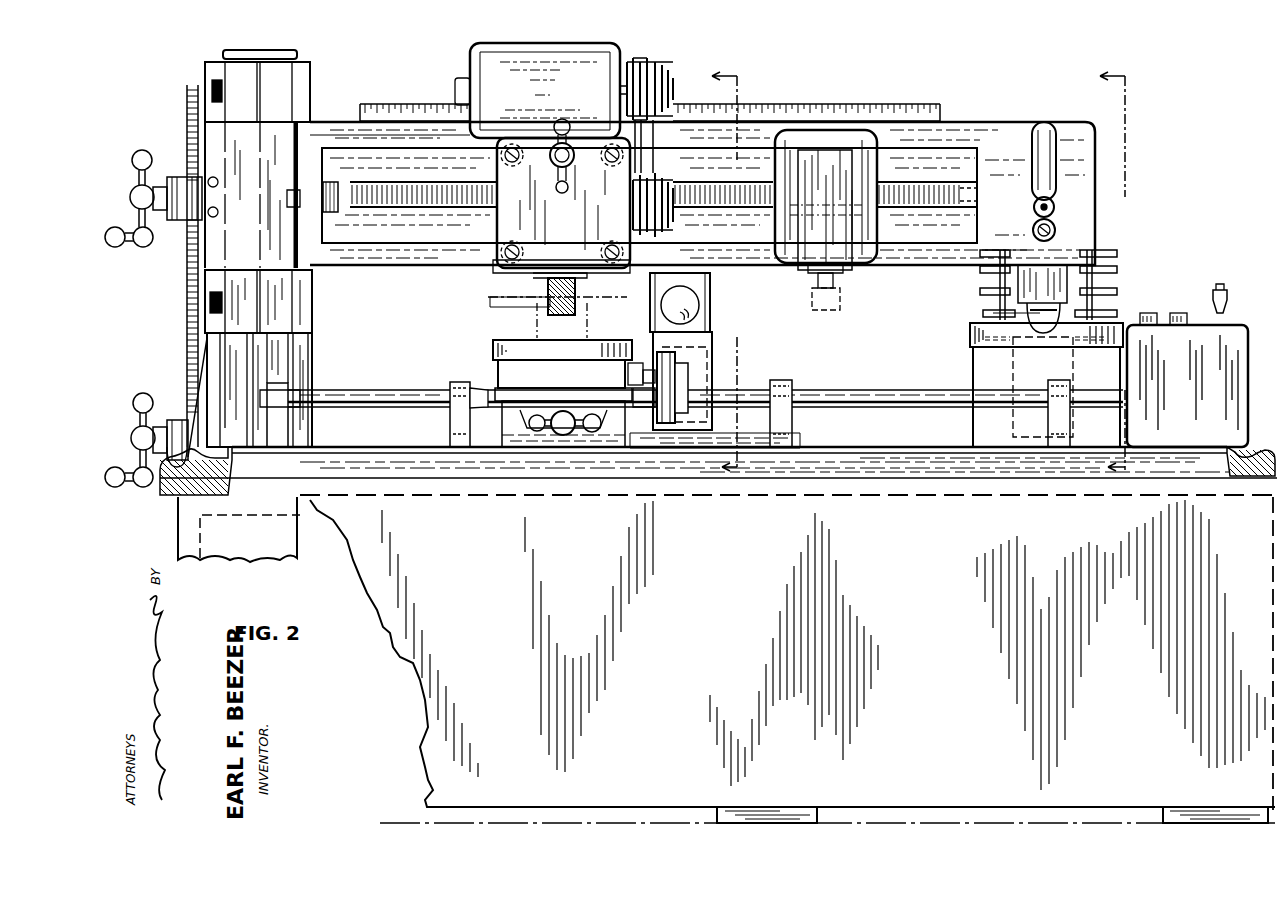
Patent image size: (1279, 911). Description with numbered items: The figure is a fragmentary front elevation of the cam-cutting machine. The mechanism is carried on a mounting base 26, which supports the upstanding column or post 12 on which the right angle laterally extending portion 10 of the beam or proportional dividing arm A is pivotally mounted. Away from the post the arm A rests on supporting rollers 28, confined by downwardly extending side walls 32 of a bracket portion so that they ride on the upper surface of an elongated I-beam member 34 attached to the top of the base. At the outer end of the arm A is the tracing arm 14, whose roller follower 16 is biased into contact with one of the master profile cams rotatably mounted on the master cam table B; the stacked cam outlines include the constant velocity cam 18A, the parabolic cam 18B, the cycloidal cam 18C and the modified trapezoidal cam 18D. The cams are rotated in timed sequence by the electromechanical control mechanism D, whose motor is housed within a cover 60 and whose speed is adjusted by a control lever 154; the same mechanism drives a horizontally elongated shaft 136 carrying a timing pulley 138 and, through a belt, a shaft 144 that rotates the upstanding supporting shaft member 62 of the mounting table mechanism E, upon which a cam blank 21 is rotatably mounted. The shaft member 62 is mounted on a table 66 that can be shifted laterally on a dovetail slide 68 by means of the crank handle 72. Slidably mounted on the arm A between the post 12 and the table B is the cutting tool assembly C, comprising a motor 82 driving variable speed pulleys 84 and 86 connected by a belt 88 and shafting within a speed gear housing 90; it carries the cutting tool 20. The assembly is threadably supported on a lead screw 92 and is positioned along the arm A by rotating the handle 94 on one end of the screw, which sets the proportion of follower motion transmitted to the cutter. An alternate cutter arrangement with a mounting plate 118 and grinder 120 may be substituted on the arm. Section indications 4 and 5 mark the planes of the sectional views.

The right angle laterally extending portion 10 is at (306, 70).
The upstanding supporting column 12 is at (317, 281).
The tracing arm 14 is at (1060, 280).
The roller follower 16 is at (993, 313).
The constant velocity cam 18A is at (1103, 253).
The parabolic cam 18B is at (1103, 270).
The cycloidal cam 18C is at (1103, 287).
The modified trapezoidal cam 18D is at (1103, 305).
The cutting tool 20 is at (548, 300).
The cam blank 21 is at (627, 298).
The mounting base 26 is at (845, 447).
The supporting rollers 28 is at (700, 300).
The downwardly extending side walls 32 is at (710, 322).
The elongated I-beam member 34 is at (695, 372).
The cover 60 is at (1223, 333).
The upstanding supporting shaft member 62 is at (563, 340).
The table 66 is at (503, 375).
The dovetail slide 68 is at (523, 422).
The crank handle 72 is at (570, 433).
The motor 82 is at (492, 65).
The variable speed pulley 84 is at (675, 70).
The variable speed pulley 86 is at (650, 127).
The belt 88 is at (668, 225).
The speed gear housing 90 is at (492, 265).
The lead screw 92 is at (927, 187).
The handle 94 is at (140, 250).
The mounting plate 118 is at (883, 262).
The grinder 120 is at (821, 317).
The horizontally elongated shaft 136 is at (880, 393).
The timing pulley 138 is at (662, 423).
The shaft 144 is at (843, 150).
The control lever 154 is at (1208, 283).
The section line 4- 4 is at (1102, 271).
The section line 5- 5 is at (713, 271).
The proportional dividing arm A is at (989, 107).
The master cam table B is at (956, 352).
The cutting tool assembly C is at (483, 283).
The electromechanical control mechanism D is at (1166, 302).
The mounting table mechanism E is at (487, 352).